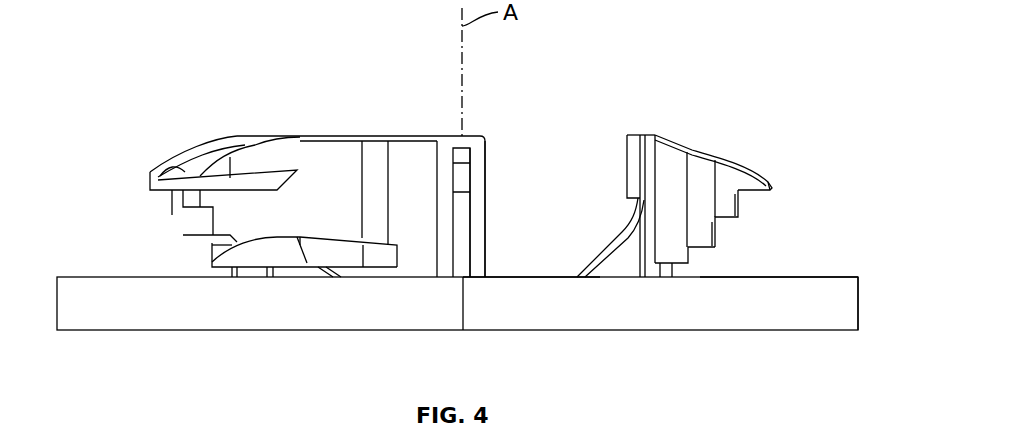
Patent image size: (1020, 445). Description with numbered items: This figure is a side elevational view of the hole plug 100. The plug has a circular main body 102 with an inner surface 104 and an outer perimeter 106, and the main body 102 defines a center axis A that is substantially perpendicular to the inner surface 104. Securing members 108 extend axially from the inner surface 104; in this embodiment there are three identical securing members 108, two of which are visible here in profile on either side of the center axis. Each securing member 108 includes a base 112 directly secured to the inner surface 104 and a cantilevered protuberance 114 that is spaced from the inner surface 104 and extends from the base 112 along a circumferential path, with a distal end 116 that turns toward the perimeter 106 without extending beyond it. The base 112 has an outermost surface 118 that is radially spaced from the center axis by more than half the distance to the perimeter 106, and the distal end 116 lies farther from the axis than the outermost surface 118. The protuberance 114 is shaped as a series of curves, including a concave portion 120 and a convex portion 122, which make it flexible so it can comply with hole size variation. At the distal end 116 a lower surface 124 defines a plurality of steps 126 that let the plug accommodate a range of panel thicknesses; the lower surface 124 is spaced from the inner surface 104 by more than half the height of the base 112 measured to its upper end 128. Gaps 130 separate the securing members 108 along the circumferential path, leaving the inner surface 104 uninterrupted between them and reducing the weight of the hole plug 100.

The hole plug 100 is at (138, 42).
The main body 102 is at (800, 318).
The inner surface 104 is at (776, 274).
The perimeter 106 is at (858, 276).
The securing member 108 is at (378, 134).
The base 112 is at (483, 137).
The cantilevered protuberance 114 is at (343, 160).
The distal end 116 is at (158, 170).
The outermost surface 118 is at (477, 232).
The concave portion 120 is at (266, 220).
The convex portion 122 is at (370, 184).
The lower surface 124 is at (180, 188).
The steps 126 is at (181, 234).
The upper end 128 is at (452, 137).
The gaps 130 is at (540, 275).